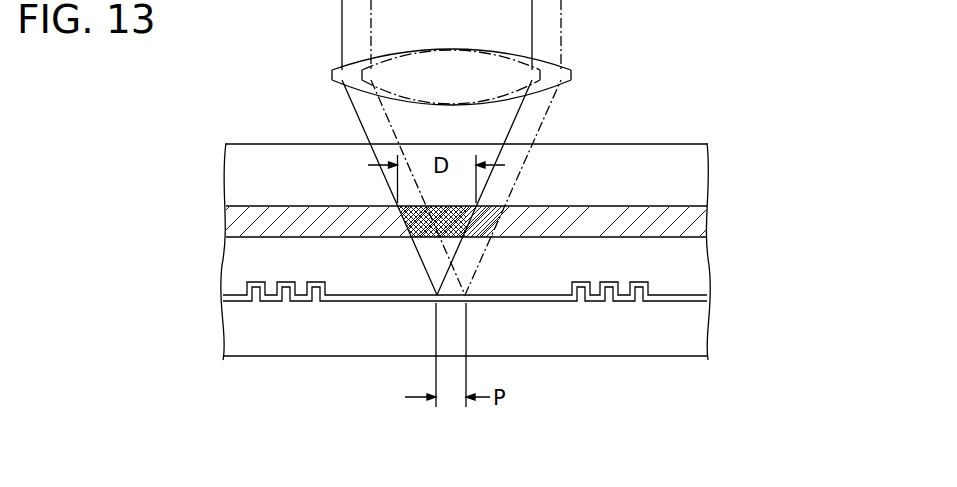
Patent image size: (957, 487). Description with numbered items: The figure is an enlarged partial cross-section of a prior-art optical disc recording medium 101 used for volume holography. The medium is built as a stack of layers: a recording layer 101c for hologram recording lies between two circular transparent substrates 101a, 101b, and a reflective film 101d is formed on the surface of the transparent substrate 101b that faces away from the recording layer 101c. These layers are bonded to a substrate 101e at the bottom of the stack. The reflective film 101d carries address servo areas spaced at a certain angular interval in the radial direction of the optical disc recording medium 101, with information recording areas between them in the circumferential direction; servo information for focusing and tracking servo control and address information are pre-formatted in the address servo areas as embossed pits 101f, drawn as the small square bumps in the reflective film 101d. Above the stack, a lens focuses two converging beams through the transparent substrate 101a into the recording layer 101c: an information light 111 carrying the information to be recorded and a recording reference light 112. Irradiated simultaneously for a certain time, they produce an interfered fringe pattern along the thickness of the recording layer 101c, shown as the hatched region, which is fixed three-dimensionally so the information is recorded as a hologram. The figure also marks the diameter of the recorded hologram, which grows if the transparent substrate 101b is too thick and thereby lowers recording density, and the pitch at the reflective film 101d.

The optical disc recording medium 101 is at (713, 119).
The transparent substrate 101a is at (693, 173).
The transparent substrate 101b is at (693, 265).
The recording layer 101c is at (700, 227).
The reflective film 101d is at (692, 292).
The substrate 101e is at (702, 327).
The embossed pits 101f is at (248, 283).
The information light 111 is at (409, 206).
The recording reference light 112 is at (426, 239).